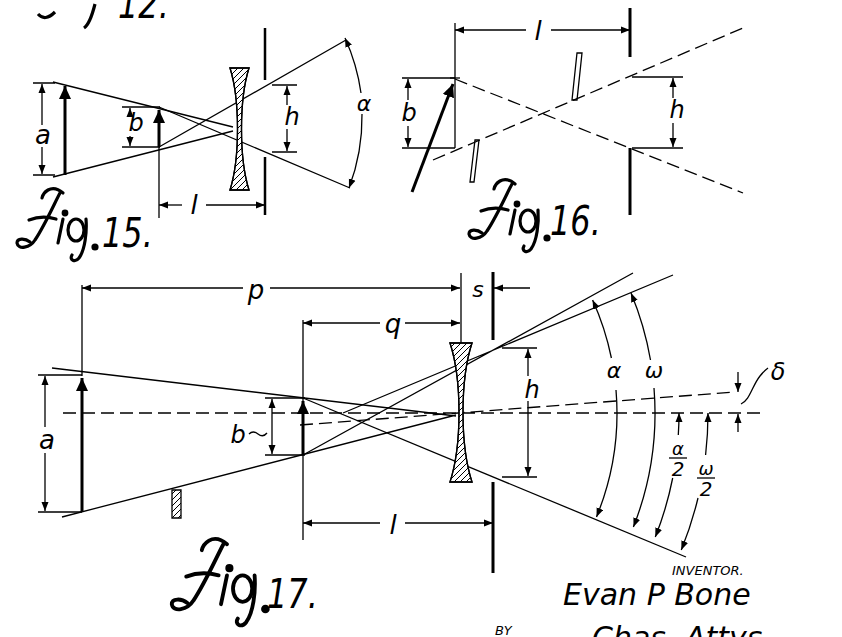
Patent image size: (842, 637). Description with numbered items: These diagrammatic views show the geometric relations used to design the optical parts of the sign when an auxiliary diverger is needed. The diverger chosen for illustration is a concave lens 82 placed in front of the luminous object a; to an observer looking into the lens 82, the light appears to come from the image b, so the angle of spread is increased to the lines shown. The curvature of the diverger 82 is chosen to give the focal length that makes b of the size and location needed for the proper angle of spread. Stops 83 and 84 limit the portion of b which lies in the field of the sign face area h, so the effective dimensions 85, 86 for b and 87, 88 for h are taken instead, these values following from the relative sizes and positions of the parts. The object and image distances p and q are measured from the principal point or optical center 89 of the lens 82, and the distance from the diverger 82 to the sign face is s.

In FIG. 15, the concave lens 82 is at (239, 67).
In FIG. 17, the concave lens 82 is at (452, 470).
In FIG. 16, the stop 83 is at (480, 162).
In FIG. 16, the stop 84 is at (576, 79).
In FIG. 16, the effective dimension of b 85 is at (463, 79).
In FIG. 16, the effective dimension of b 86 is at (455, 151).
In FIG. 16, the effective dimension of h 87 is at (636, 63).
In FIG. 16, the effective dimension of h 88 is at (629, 150).
In FIG. 17, the optical center 89 is at (456, 401).